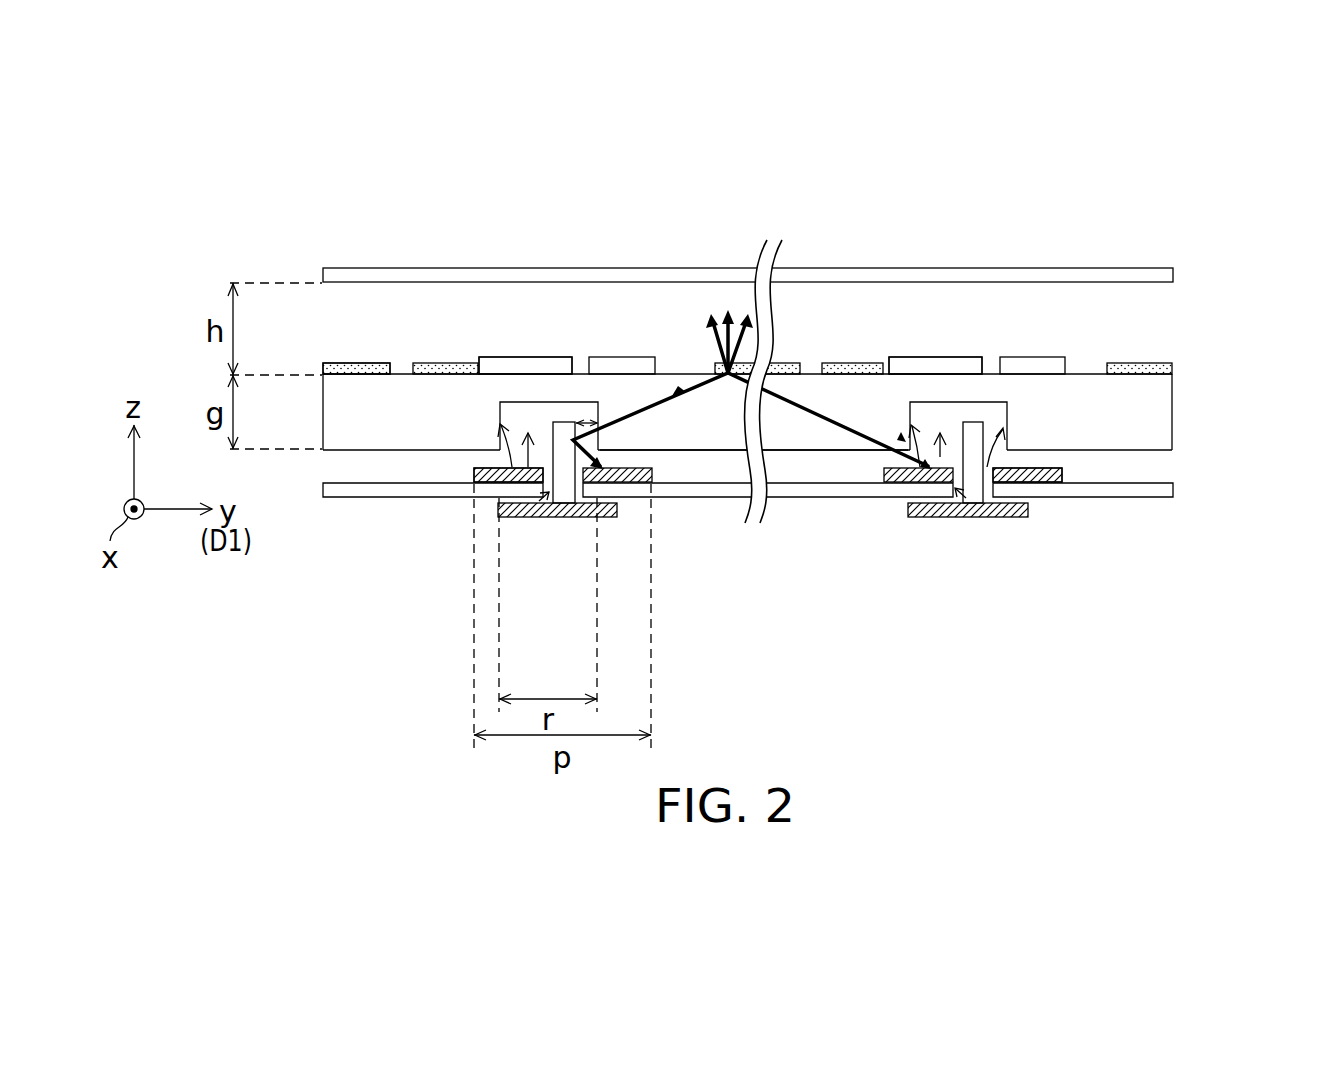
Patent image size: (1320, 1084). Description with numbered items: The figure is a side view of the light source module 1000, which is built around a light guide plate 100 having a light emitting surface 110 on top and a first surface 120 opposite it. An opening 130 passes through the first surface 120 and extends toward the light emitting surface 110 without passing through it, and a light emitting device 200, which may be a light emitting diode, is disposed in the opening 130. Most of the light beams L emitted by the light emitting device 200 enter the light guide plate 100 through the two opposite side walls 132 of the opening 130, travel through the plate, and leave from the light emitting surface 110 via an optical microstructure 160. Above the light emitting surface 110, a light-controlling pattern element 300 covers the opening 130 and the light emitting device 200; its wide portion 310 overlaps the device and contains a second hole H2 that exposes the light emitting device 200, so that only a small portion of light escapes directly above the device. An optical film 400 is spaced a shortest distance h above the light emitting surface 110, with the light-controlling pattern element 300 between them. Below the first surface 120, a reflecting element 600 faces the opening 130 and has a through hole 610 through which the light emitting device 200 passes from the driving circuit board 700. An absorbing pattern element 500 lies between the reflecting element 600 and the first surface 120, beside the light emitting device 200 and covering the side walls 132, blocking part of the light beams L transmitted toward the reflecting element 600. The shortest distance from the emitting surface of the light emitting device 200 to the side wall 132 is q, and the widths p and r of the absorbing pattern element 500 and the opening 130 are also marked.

The light guide plate 100 is at (1150, 412).
The light emitting surface 110 is at (1088, 370).
The first surface 120 is at (1130, 453).
The opening 130 is at (520, 481).
The side walls 132 is at (503, 484).
The optical microstructure 160 is at (357, 363).
The light emitting device 200 is at (577, 428).
The light-controlling pattern element 300 is at (527, 357).
The wide portion 310 is at (730, 287).
The optical film 400 is at (1173, 272).
The absorbing pattern element 500 is at (483, 484).
The reflecting element 600 is at (1132, 492).
The through holes 610 is at (556, 494).
The driving circuit board 700 is at (617, 514).
The light source module 1000 is at (1262, 695).
The second hole H2 is at (581, 358).
The light beams L is at (655, 400).
The shortest distance from light emitting surface of light emitting device to side w q is at (587, 421).